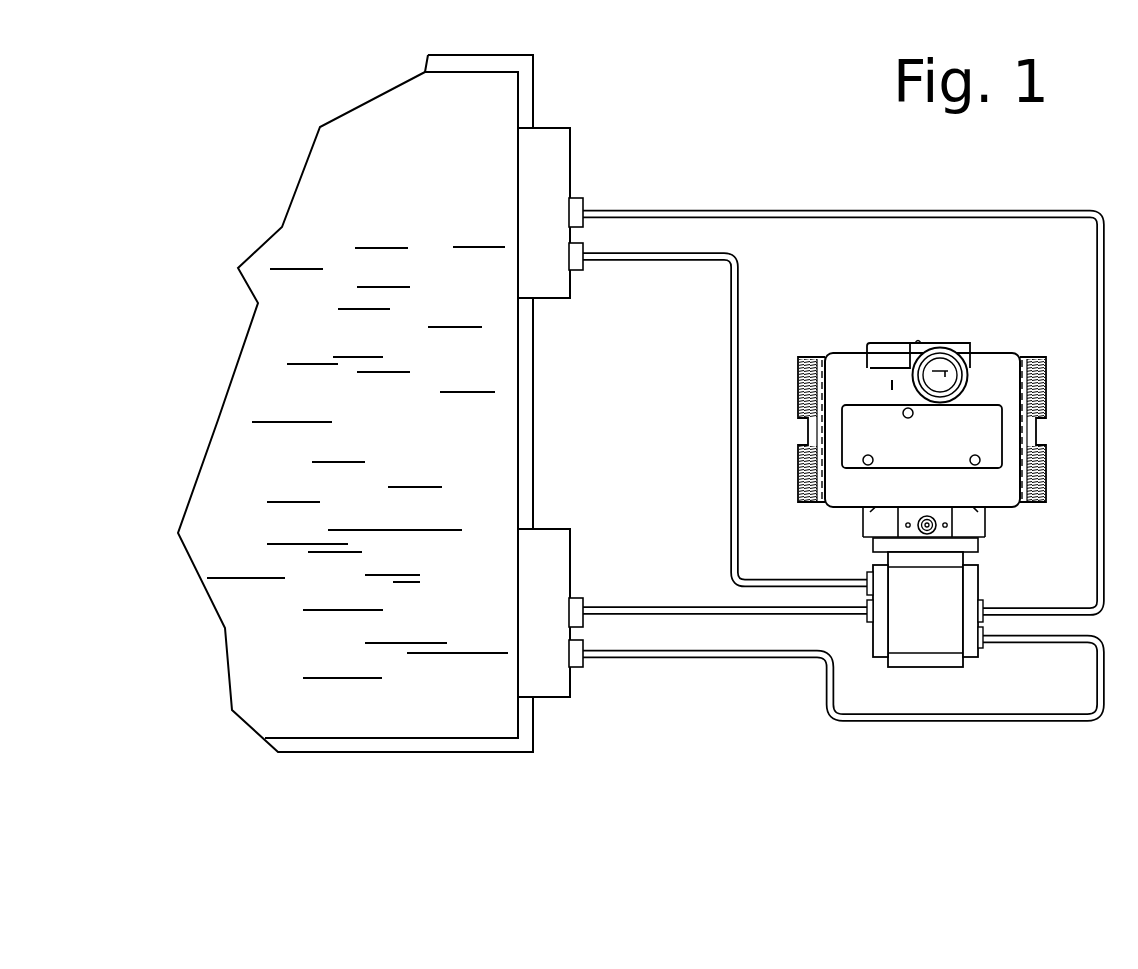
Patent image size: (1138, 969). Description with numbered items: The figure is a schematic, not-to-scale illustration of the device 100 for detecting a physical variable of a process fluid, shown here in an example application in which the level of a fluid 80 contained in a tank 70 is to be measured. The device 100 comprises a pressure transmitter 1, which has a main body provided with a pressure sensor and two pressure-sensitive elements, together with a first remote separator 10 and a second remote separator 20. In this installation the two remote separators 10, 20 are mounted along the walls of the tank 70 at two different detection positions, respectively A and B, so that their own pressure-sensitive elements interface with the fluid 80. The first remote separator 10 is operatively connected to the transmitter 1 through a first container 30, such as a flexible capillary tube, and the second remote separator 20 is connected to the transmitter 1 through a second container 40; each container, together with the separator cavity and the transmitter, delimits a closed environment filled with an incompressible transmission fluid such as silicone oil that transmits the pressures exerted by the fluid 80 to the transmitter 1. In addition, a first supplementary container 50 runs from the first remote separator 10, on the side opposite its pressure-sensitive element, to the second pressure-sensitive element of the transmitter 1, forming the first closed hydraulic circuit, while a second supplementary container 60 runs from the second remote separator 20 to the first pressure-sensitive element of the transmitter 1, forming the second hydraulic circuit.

The pressure transmitter 1 is at (932, 330).
The first remote separator 10 is at (543, 186).
The second remote separator 20 is at (556, 640).
The first container 30 is at (947, 208).
The second container 40 is at (637, 607).
The first supplementary container 50 is at (728, 390).
The second supplementary container 60 is at (943, 723).
The tank 70 is at (535, 458).
The fluid 80 is at (394, 668).
The device for detecting a physical variable 100 is at (773, 760).
The first detection position A is at (510, 203).
The second detection position B is at (508, 600).